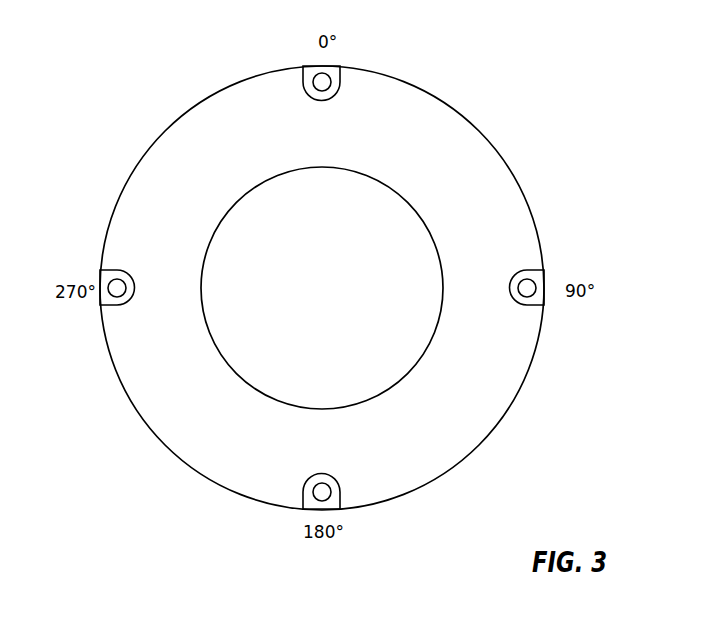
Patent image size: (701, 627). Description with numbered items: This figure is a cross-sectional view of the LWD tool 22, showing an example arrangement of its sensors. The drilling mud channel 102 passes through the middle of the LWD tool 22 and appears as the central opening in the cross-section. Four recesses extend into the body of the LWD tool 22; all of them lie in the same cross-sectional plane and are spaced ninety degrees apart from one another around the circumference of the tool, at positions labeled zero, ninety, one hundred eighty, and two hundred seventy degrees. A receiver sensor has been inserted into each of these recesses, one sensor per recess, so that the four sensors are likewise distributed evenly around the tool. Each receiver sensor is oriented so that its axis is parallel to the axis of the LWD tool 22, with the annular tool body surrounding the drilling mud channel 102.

The LWD tool 22 is at (230, 161).
The drilling mud channel 102 is at (338, 296).